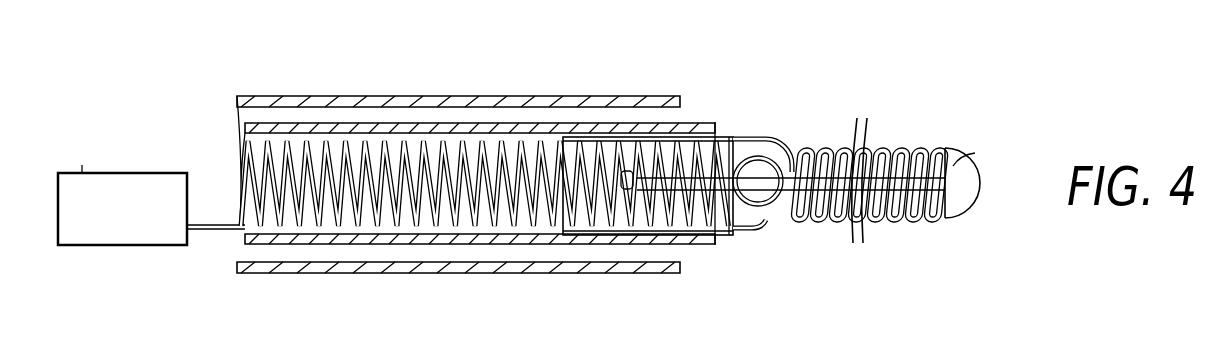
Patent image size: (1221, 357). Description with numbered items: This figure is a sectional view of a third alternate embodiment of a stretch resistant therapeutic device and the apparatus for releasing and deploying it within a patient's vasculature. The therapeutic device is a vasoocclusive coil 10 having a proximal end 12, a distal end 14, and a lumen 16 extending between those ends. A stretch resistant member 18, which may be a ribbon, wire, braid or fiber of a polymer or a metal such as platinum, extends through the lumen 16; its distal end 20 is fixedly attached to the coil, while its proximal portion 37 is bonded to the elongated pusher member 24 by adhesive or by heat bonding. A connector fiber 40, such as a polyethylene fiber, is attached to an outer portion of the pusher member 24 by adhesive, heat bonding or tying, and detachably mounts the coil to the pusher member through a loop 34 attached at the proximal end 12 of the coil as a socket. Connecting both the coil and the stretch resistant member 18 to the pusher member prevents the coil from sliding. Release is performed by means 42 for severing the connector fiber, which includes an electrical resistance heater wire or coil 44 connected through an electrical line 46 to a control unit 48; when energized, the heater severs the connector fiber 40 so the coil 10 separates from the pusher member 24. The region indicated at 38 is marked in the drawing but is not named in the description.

The vasoocclusive coil 10 is at (880, 129).
The proximal end 12 is at (800, 222).
The distal end 14 is at (953, 146).
The lumen 16 is at (875, 218).
The stretch resistant member 18 is at (790, 170).
The distal end of stretch resistant member 20 is at (953, 166).
The elongated pusher member 24 is at (245, 180).
The loop 34 is at (778, 222).
The proximal portion of stretch resistant member 37 is at (628, 191).
The release mechanism 38 is at (745, 106).
The connector fiber 40 is at (725, 135).
The means for severing the connector fiber 42 is at (131, 254).
The electrical resistance heater wire or coil 44 is at (737, 225).
The electrical line 46 is at (205, 231).
The control unit 48 is at (82, 173).